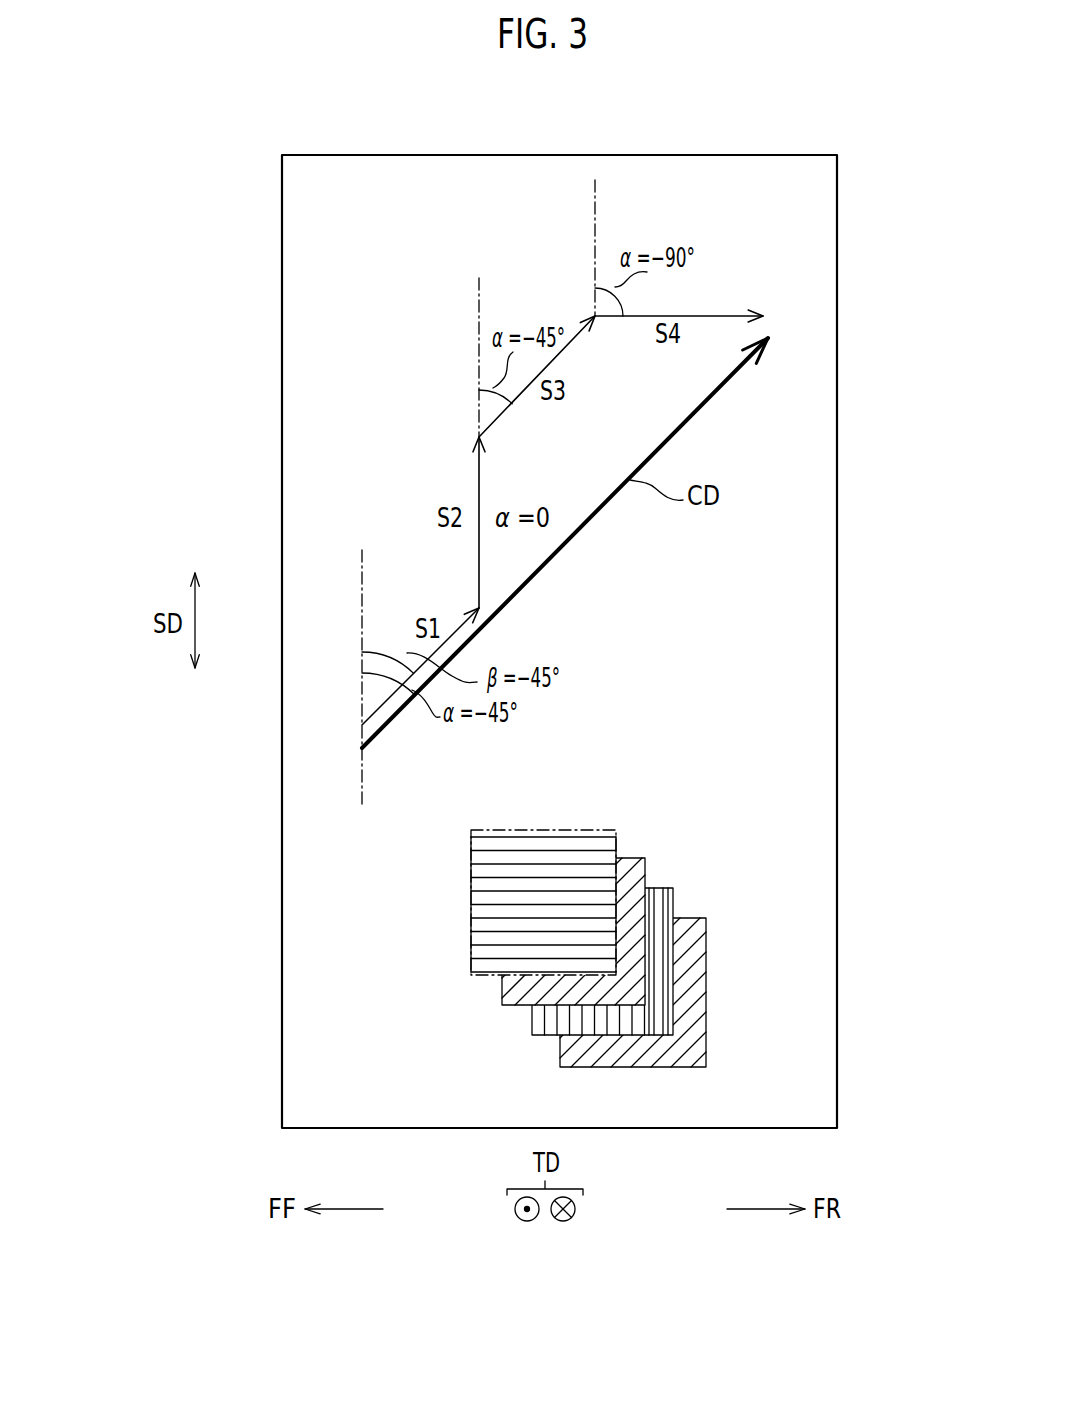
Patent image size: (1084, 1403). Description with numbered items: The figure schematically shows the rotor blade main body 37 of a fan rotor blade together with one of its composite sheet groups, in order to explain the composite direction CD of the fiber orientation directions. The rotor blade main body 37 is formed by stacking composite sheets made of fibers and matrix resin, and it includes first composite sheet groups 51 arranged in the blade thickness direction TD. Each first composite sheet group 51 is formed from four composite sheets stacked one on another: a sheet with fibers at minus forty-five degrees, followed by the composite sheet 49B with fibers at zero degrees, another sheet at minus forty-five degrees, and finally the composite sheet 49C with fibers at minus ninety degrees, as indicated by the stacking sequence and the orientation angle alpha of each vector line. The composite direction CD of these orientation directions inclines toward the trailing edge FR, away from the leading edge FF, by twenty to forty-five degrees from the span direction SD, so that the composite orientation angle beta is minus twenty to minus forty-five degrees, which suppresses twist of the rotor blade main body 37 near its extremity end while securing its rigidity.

The rotor blade main body 37 is at (599, 141).
The composite sheet 49B is at (540, 1037).
The composite sheet 49C is at (476, 978).
The first composite sheet group 51 is at (657, 888).